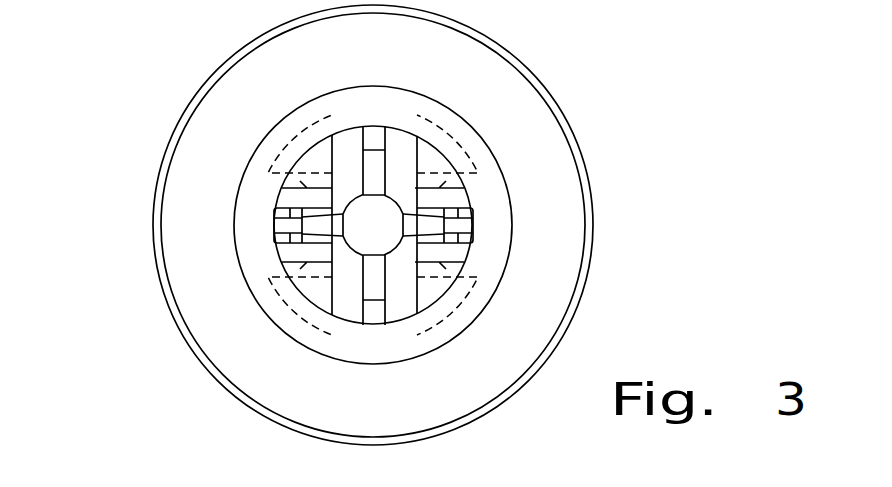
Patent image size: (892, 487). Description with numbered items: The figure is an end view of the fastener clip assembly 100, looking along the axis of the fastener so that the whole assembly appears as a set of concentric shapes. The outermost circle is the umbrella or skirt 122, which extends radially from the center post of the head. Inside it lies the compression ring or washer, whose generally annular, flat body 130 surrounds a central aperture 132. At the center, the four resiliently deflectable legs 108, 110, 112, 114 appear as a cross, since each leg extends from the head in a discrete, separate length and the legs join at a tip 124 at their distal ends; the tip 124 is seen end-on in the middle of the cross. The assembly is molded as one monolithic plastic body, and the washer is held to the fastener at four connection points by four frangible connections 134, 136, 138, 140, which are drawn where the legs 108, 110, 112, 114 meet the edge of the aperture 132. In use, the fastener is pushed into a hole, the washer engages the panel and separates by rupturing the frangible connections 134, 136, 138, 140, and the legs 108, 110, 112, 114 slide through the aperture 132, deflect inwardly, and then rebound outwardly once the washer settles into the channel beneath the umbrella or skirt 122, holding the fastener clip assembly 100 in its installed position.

The fastener clip assembly 100 is at (165, 87).
The resiliently deflectable leg 108 is at (310, 137).
The resiliently deflectable leg 110 is at (445, 138).
The resiliently deflectable leg 112 is at (447, 307).
The resiliently deflectable leg 114 is at (285, 297).
The umbrella or skirt 122 is at (572, 215).
The tip 124 is at (365, 222).
The annular flat body 130 is at (390, 347).
The central aperture 132 is at (313, 307).
The frangible connection 134 is at (287, 253).
The frangible connection 136 is at (287, 198).
The frangible connection 138 is at (440, 197).
The frangible connection 140 is at (457, 255).